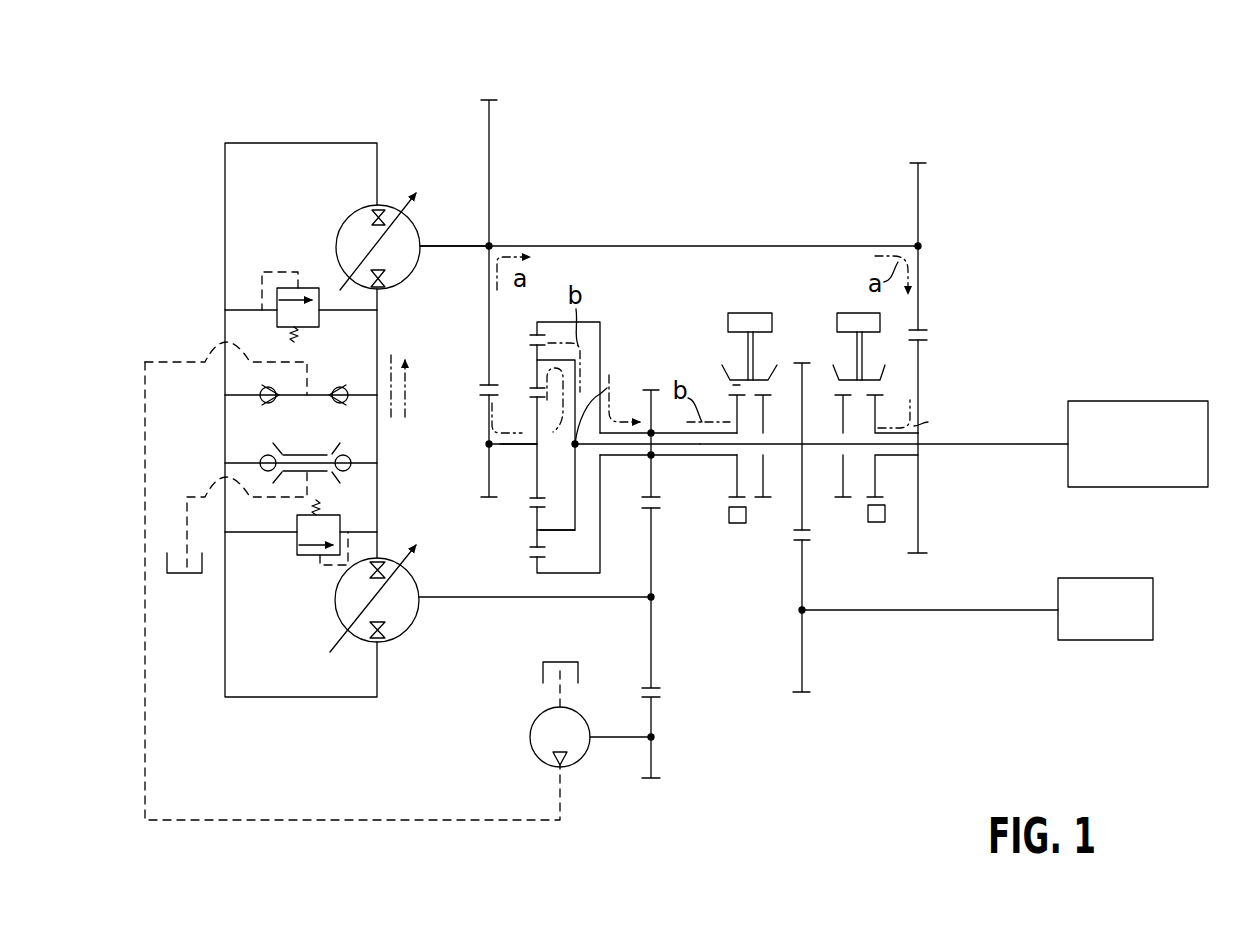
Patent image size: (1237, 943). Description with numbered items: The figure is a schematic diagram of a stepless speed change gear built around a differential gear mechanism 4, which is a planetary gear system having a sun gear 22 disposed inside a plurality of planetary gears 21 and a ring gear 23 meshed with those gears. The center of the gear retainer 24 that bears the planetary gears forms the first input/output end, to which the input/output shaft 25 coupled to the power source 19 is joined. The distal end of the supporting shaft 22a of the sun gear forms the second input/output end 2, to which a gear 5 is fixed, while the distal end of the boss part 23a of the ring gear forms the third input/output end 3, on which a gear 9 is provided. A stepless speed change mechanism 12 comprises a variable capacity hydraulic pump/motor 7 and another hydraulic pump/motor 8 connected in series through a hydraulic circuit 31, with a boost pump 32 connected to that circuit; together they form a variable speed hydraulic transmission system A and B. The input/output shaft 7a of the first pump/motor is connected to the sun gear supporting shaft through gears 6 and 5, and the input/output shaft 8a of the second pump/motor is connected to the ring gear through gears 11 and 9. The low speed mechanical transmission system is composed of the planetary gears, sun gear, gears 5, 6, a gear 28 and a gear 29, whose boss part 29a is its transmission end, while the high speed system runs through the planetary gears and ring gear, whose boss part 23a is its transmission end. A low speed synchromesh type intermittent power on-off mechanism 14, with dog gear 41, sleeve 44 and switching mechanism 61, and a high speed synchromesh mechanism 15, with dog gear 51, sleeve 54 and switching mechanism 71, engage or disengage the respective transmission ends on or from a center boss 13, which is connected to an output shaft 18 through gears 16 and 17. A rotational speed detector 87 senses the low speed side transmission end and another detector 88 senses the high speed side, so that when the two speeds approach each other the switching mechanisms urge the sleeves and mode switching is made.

The stepless speed change mechanism 12 is at (218, 135).
The hydraulic circuit 31 is at (290, 143).
The hydraulic pump/motor 7 is at (385, 207).
The input/output shaft 7a is at (428, 246).
The hydraulic pump/motor 8 is at (397, 636).
The input/output shaft 8a is at (430, 597).
The boost pump 32 is at (534, 752).
The gear 6 is at (490, 137).
The gear 5 is at (484, 423).
The second input/output end 2 is at (488, 447).
The supporting shaft 22a is at (507, 448).
The sun gear 22 is at (530, 490).
The ring gear 23 is at (546, 322).
The planetary gears 21 is at (537, 365).
The gear retainer 24 is at (560, 531).
The third input/output end 3 is at (648, 456).
The input/output shaft 25 is at (1012, 443).
The boss part 23a is at (700, 455).
The gear 9 is at (648, 497).
The gear 11 is at (651, 645).
The differential gear mechanism 4 is at (617, 303).
The high speed side synchromesh type intermittent power on-off mechanism 15 is at (733, 360).
The switching mechanism 71 is at (748, 312).
The sleeve 54 is at (775, 368).
The dog gear 51 is at (730, 405).
The low speed synchromesh type intermittent power on-off mechanism 14 is at (882, 348).
The switching mechanism 61 is at (853, 312).
The sleeve 44 is at (836, 372).
The dog gear 41 is at (893, 403).
The gear 28 is at (918, 196).
The boss part 29a is at (905, 460).
The gear 29 is at (918, 530).
The center boss 13 is at (805, 455).
The gear 16 is at (800, 521).
The gear 17 is at (800, 683).
The rotational speed detector 88 is at (737, 524).
The rotational speed detector 87 is at (874, 523).
The power source 19 is at (1165, 401).
The output shaft 18 is at (1104, 640).
The variable speed hydraulic transmission system A is at (407, 384).
The variable speed hydraulic transmission system B is at (383, 402).